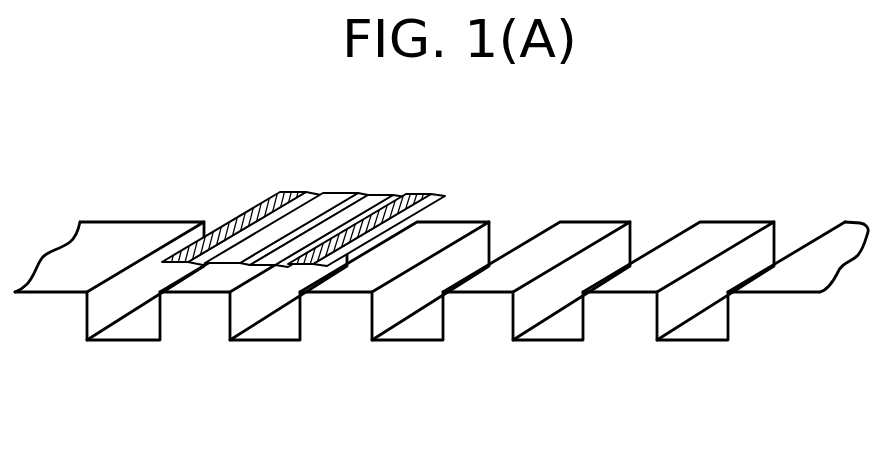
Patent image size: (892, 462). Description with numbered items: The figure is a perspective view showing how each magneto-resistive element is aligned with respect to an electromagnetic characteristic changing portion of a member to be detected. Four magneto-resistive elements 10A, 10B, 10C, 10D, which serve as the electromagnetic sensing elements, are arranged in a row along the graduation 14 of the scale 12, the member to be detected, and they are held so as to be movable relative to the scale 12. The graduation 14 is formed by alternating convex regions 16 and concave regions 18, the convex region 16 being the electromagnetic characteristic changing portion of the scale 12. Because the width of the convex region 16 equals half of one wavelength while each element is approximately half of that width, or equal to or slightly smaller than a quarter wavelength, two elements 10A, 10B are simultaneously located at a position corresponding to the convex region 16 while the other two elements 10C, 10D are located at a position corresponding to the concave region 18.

The magneto-resistive element 10A is at (268, 210).
The magneto-resistive element 10B is at (337, 192).
The magneto-resistive element 10C is at (387, 193).
The magneto-resistive element 10D is at (428, 194).
The scale 12 is at (88, 207).
The graduation 14 is at (662, 406).
The convex region 16 is at (190, 293).
The concave region 18 is at (268, 328).